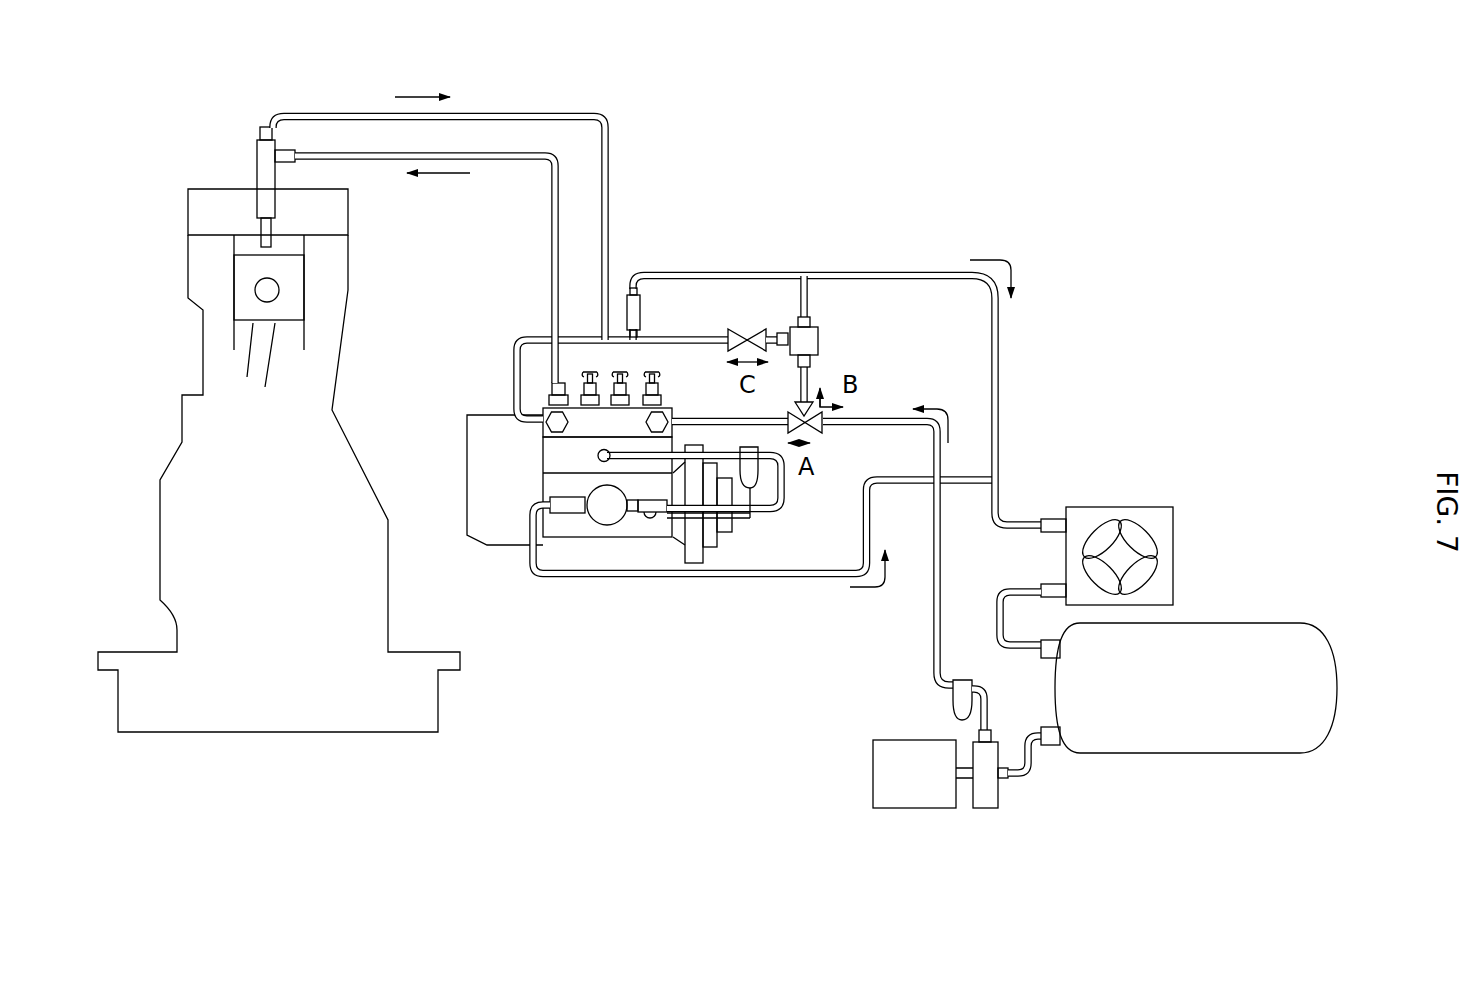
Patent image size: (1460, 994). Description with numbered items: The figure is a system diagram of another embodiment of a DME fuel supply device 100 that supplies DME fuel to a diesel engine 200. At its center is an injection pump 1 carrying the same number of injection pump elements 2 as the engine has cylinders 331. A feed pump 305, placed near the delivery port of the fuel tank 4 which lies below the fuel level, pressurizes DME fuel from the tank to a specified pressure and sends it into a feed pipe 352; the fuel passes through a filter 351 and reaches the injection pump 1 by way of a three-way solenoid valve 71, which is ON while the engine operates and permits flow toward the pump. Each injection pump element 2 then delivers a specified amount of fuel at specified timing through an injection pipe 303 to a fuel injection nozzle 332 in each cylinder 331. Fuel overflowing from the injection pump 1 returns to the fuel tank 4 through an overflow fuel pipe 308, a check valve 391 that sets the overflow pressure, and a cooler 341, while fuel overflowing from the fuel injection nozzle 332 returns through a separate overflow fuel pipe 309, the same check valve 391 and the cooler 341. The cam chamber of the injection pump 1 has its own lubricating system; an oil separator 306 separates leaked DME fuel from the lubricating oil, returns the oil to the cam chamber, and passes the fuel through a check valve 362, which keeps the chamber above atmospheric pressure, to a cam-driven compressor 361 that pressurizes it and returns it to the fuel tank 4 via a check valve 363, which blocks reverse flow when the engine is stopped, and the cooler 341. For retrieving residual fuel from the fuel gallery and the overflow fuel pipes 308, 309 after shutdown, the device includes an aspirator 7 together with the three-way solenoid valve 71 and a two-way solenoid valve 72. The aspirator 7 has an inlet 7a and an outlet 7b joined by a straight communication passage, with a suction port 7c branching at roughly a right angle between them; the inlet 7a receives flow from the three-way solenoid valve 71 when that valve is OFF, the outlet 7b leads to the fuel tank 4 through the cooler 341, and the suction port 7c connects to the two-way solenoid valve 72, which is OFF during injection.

The DME fuel supply device 100 is at (1032, 165).
The diesel engine 200 is at (170, 450).
The injection pump 1 is at (574, 542).
The injection pump elements 2 is at (547, 392).
The fuel tank 4 is at (1250, 640).
The aspirator 7 is at (820, 338).
The inlet 7a is at (813, 363).
The outlet 7b is at (817, 317).
The suction port 7c is at (785, 333).
The three-way solenoid valve 71 is at (825, 430).
The two-way solenoid valve 72 is at (747, 330).
The injection pipe 303 is at (500, 160).
The feed pump 305 is at (948, 814).
The oil separator 306 is at (758, 480).
The overflow fuel pipe 308 is at (577, 337).
The overflow fuel pipe 309 is at (608, 186).
The cylinders 331 is at (247, 243).
The fuel injection nozzle 332 is at (257, 165).
The cooler 341 is at (1138, 507).
The filter 351 is at (953, 695).
The feed pipe 352 is at (935, 618).
The compressor 361 is at (610, 517).
The check valve 362 is at (645, 518).
The check valve 363 is at (533, 493).
The check valve 391 is at (642, 315).